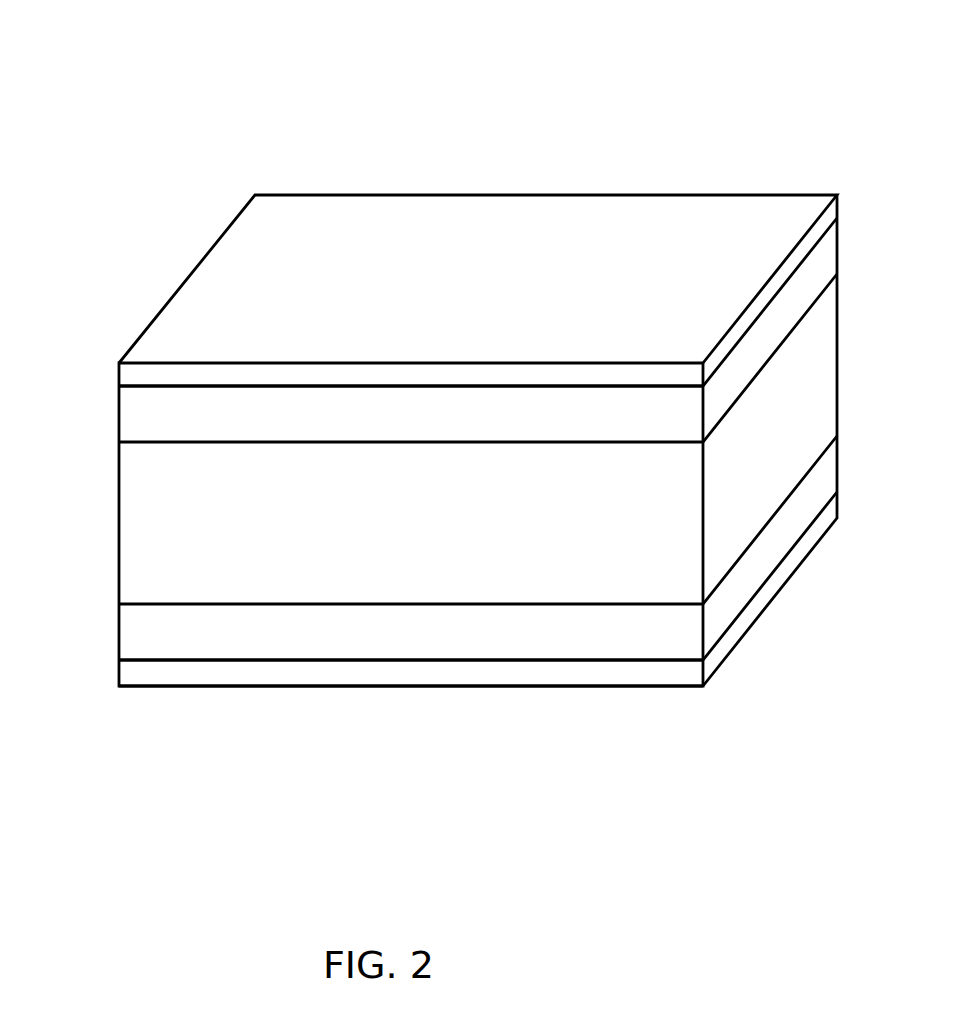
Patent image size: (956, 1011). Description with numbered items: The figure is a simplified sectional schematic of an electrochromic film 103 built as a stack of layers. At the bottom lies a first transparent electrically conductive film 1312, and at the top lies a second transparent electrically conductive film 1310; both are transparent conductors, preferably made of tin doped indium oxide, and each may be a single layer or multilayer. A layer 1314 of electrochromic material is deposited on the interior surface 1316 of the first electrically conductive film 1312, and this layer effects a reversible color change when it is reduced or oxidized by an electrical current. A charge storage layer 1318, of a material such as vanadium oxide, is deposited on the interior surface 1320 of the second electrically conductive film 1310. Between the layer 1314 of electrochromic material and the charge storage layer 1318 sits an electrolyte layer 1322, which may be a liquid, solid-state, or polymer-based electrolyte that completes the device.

The electrochromic film 103 is at (430, 119).
The second transparent electrically conductive film 1310 is at (204, 378).
The charge storage layer 1318 is at (452, 429).
The interior surface of the second electrically conductive film 1320 is at (158, 388).
The electrolyte layer 1322 is at (452, 517).
The layer of electrochromic material 1314 is at (452, 652).
The interior surface of the first electrically conductive film 1316 is at (163, 661).
The first transparent electrically conductive film 1312 is at (598, 675).